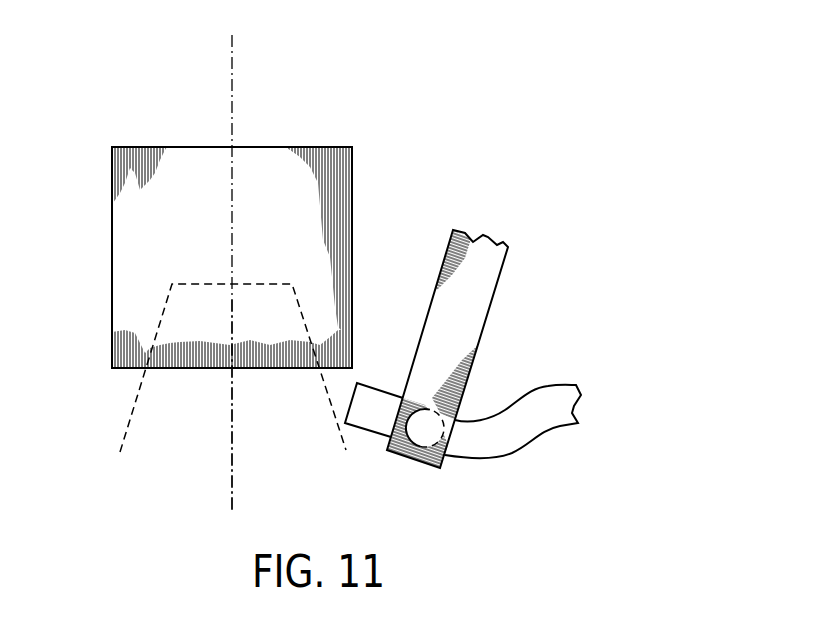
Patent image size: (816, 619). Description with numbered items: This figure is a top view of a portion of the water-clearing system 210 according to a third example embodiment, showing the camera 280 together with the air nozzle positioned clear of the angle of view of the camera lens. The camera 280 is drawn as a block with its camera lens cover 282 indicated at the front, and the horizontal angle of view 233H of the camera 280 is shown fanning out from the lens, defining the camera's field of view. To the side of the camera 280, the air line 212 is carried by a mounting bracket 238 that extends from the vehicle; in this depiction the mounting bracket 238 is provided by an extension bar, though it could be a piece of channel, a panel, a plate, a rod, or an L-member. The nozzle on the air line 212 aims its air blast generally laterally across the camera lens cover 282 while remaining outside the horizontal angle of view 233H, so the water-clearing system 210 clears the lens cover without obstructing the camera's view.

The camera 280 is at (92, 317).
The camera lens cover 282 is at (199, 376).
The horizontal angle of view 233H is at (285, 425).
The mounting bracket 238 is at (503, 313).
The water-clearing system 210 is at (558, 446).
The air line 212 is at (585, 409).